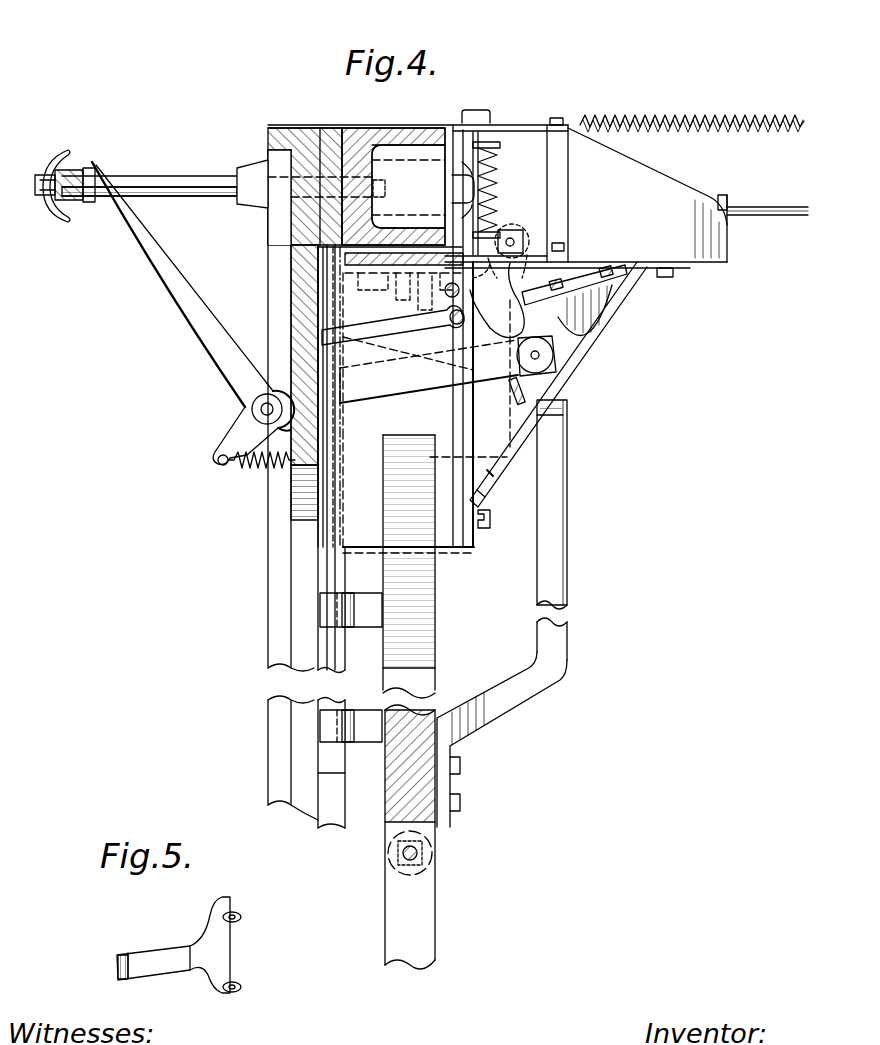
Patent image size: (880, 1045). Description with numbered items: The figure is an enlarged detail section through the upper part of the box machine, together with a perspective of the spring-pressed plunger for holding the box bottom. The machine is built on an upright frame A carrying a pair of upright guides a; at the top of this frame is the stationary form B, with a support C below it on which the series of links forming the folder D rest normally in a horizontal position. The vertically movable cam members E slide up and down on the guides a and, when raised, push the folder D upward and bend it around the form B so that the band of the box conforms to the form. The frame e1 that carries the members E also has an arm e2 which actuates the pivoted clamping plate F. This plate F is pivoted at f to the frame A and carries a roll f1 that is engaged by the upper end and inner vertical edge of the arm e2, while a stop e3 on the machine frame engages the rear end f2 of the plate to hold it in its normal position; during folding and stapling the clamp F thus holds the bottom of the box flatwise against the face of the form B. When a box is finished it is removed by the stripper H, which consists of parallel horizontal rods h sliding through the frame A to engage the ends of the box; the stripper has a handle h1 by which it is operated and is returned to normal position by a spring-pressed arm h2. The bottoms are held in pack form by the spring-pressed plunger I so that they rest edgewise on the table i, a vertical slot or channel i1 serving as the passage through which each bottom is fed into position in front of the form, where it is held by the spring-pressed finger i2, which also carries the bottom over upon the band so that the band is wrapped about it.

In FIG. 4, the upright frame A is at (302, 607).
In FIG. 4, the form B is at (360, 143).
In FIG. 4, the support C is at (462, 292).
In FIG. 4, the folder D is at (392, 262).
In FIG. 4, the cam members E is at (403, 507).
In FIG. 4, the clamping plate F is at (562, 320).
In FIG. 4, the stripper H is at (70, 180).
In FIG. 4, the spring-pressed plunger I is at (765, 208).
In FIG. 4, the upright guides a is at (335, 520).
In FIG. 4, the frame carrying the cam members e1 is at (405, 796).
In FIG. 4, the arm e2 is at (568, 532).
In FIG. 4, the stop e3 is at (318, 317).
In FIG. 4, the pivot of the clamping plate f is at (450, 320).
In FIG. 4, the roll f1 is at (513, 226).
In FIG. 4, the rear end of the clamping plate f2 is at (502, 472).
In FIG. 4, the rods h is at (174, 182).
In FIG. 4, the handle h1 is at (60, 165).
In FIG. 4, the spring-pressed arm h2 is at (170, 275).
In FIG. 4, the table i is at (727, 255).
In FIG. 4, the vertical slot or channel i1 is at (452, 226).
In FIG. 4, the spring-pressed finger i2 is at (483, 172).
In FIG. 5, the spring-pressed finger i2 is at (128, 960).